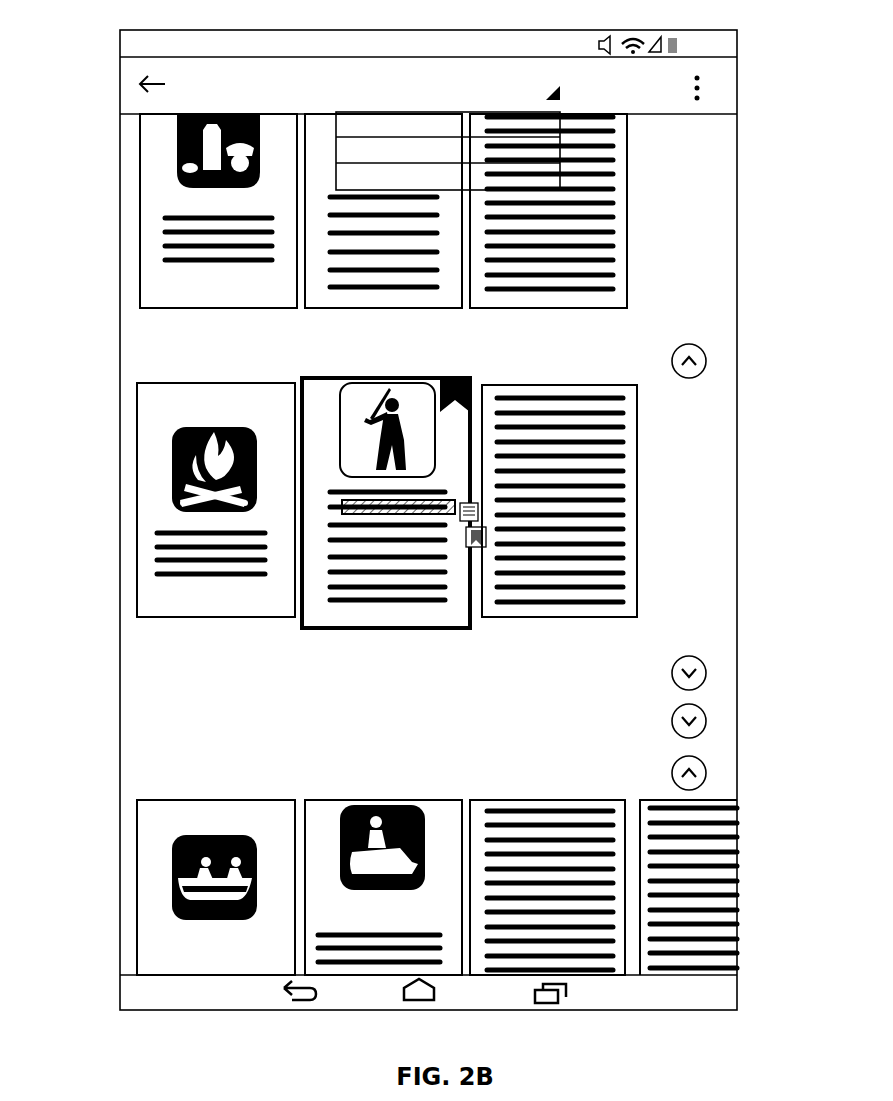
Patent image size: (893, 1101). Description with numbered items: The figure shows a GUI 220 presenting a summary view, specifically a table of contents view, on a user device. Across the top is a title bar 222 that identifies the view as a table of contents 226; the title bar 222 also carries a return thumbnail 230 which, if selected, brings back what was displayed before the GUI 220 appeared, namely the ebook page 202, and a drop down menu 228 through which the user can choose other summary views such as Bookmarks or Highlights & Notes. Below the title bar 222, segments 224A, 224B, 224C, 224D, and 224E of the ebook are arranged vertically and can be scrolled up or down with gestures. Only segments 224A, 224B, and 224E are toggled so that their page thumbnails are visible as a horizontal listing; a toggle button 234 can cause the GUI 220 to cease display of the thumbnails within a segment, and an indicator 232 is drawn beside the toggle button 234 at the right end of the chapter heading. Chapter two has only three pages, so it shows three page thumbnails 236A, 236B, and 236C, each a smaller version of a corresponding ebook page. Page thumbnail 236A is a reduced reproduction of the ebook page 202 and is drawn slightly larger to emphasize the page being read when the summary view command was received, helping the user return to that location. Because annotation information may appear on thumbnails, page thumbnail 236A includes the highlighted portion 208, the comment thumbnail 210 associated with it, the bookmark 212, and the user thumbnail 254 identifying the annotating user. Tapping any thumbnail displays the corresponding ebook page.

The GUI 220 is at (94, 37).
The title bar 222 is at (108, 45).
The segment 224A is at (108, 118).
The segment 224B is at (108, 345).
The segment 224C is at (108, 658).
The segment 224D is at (108, 703).
The segment 224E is at (108, 755).
The table of contents 226 is at (442, 78).
The drop down menu 228 is at (553, 96).
The return thumbnail 230 is at (167, 75).
The page number indicator 232 is at (661, 354).
The toggle button 234 is at (709, 350).
The page thumbnail 236A is at (476, 430).
The page thumbnail 236B is at (496, 397).
The page thumbnail 236C is at (174, 400).
The bookmark 212 is at (460, 385).
The comment thumbnail 210 is at (484, 498).
The user thumbnail 254 is at (488, 536).
The highlighted portion 208 is at (485, 539).
The ebook page 202 is at (433, 614).